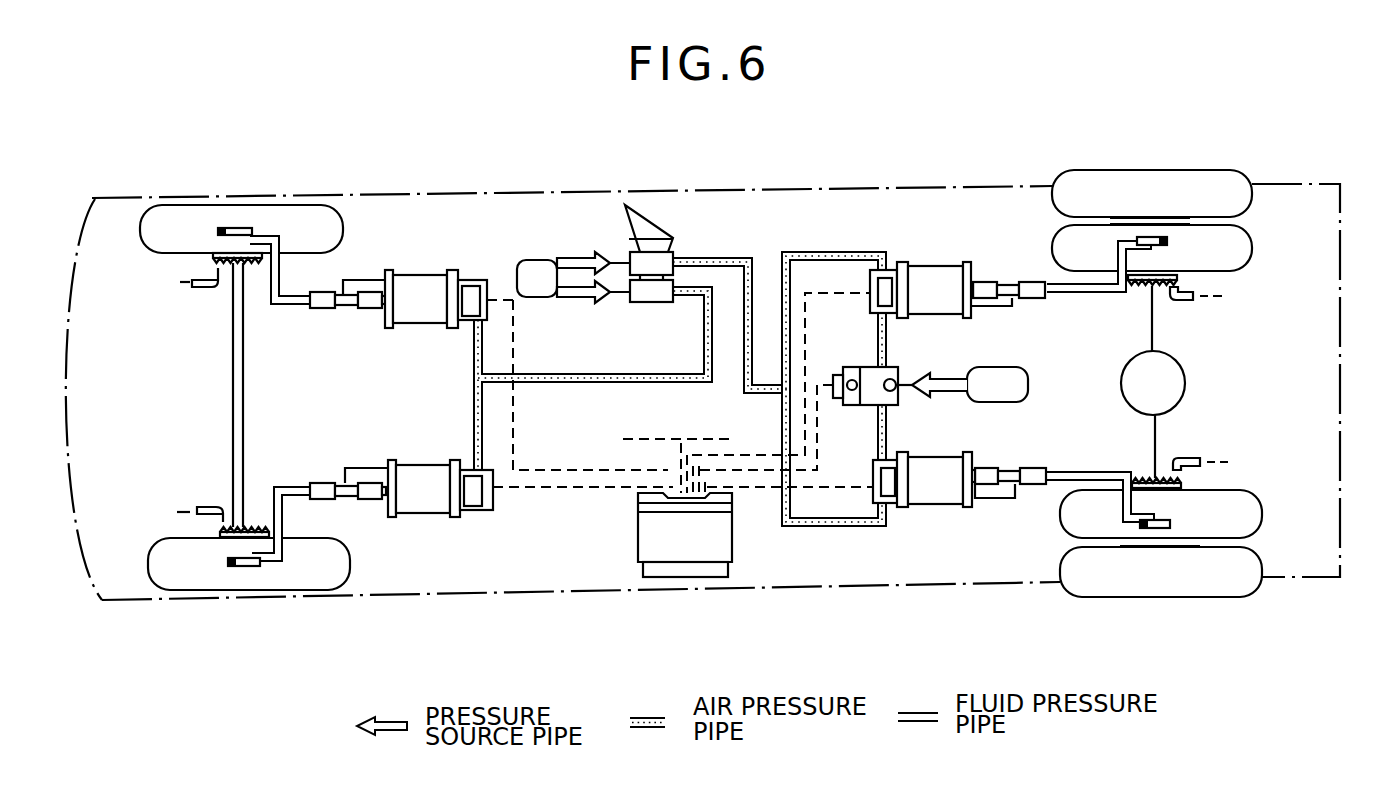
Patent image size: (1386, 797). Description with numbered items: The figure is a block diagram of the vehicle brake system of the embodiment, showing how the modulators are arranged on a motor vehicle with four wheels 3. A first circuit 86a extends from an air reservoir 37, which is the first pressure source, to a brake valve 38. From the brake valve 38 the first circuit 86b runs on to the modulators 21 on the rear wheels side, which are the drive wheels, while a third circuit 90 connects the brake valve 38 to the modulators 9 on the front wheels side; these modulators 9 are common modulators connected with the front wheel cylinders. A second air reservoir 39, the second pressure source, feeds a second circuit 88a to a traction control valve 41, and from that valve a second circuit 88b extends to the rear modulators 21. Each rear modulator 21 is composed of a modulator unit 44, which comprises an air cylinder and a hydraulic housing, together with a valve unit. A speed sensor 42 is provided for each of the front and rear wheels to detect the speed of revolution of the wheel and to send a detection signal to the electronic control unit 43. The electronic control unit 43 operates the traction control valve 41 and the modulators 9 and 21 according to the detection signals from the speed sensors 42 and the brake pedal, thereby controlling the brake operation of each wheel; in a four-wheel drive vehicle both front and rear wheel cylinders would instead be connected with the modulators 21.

The wheel 3 is at (238, 228).
The modulator 9 is at (412, 262).
The modulator 21 is at (927, 256).
The air reservoir 37 is at (531, 258).
The brake valve 38 is at (675, 248).
The air reservoir 39 is at (1028, 383).
The traction control valve 41 is at (867, 405).
The speed sensor 42 is at (198, 277).
The electronic control unit 43 is at (685, 548).
The modulator unit 44 is at (405, 345).
The first circuit 86a is at (577, 257).
The first circuit 86b is at (752, 257).
The second circuit 88a is at (948, 390).
The second circuit 88b is at (890, 350).
The third circuit 90 is at (578, 386).